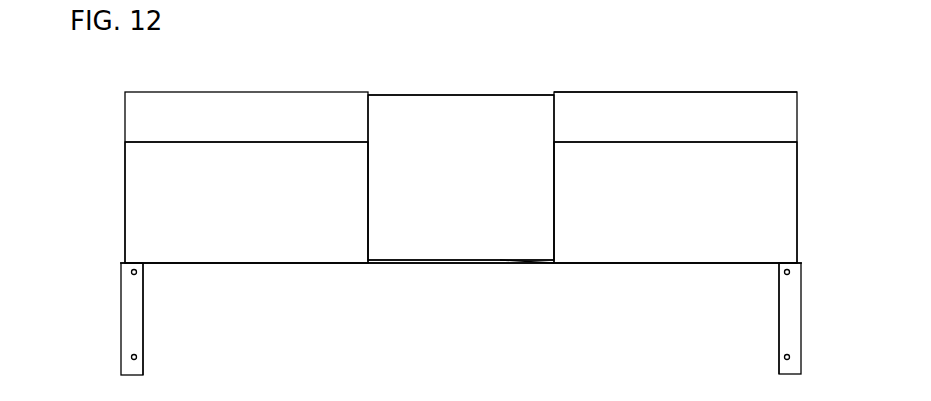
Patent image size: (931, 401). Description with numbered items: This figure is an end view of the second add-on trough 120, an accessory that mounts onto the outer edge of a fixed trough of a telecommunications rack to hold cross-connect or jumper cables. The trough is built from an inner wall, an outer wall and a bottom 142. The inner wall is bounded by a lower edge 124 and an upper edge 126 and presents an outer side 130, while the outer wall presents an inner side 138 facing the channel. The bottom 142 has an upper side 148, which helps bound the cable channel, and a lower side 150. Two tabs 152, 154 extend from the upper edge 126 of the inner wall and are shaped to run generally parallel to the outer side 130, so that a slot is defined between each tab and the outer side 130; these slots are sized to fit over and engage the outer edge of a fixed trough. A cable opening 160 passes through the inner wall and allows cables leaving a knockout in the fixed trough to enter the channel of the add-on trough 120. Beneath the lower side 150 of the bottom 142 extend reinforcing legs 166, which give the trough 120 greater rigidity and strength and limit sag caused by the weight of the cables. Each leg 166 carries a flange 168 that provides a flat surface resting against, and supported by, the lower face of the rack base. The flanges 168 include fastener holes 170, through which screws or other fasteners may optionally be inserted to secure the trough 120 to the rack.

The second add-on trough 120 is at (103, 97).
The lower edge 124 is at (308, 265).
The upper edge 126 is at (578, 91).
The outer side 130 is at (249, 214).
The inner side 138 is at (471, 190).
The bottom 142 is at (529, 266).
The upper side 148 is at (507, 259).
The lower side 150 is at (465, 264).
The tab 152 is at (249, 130).
The tab 154 is at (698, 130).
The cable opening 160 is at (470, 140).
The reinforcing legs 166 is at (715, 0).
The flange 168 is at (136, 328).
The fastener holes 170 is at (137, 359).